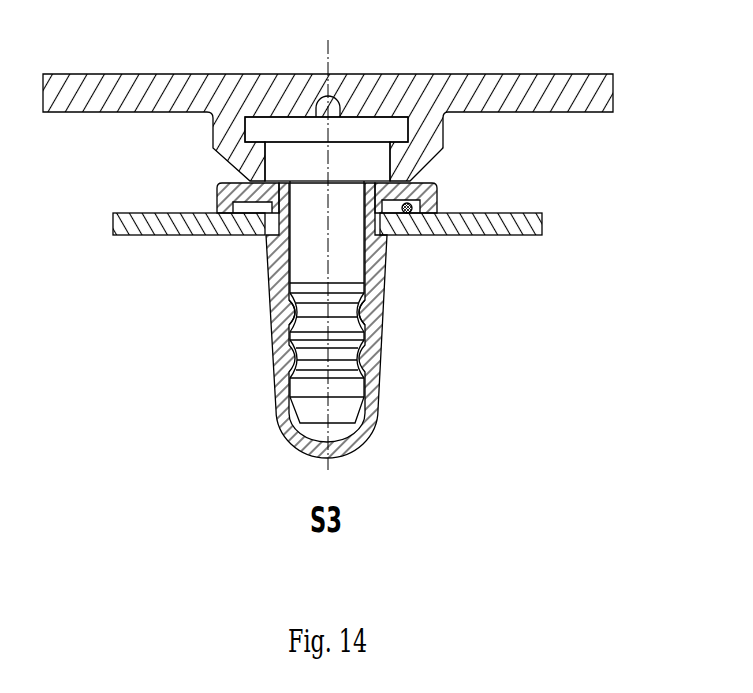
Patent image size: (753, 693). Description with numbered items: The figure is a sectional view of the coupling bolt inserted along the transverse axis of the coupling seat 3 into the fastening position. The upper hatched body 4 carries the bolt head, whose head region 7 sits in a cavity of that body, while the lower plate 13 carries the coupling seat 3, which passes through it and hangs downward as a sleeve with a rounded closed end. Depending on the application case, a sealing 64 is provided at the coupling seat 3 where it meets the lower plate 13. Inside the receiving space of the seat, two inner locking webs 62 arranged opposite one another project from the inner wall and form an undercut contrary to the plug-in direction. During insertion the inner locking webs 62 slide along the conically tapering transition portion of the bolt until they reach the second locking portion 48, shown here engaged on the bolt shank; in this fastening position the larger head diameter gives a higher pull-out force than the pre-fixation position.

The coupling seat 3 is at (370, 396).
The first component / carrier 4 is at (443, 90).
The pin with head 7 is at (347, 127).
The second component (plate) 13 is at (463, 228).
The second locking portion 48 is at (307, 307).
The inner locking webs 62 is at (355, 313).
The sealing 64 is at (440, 202).